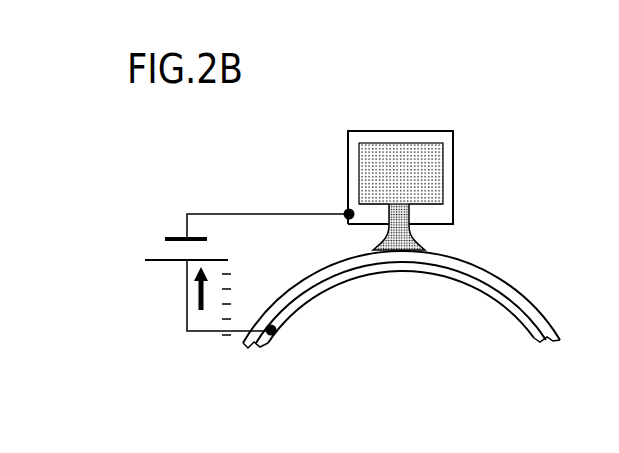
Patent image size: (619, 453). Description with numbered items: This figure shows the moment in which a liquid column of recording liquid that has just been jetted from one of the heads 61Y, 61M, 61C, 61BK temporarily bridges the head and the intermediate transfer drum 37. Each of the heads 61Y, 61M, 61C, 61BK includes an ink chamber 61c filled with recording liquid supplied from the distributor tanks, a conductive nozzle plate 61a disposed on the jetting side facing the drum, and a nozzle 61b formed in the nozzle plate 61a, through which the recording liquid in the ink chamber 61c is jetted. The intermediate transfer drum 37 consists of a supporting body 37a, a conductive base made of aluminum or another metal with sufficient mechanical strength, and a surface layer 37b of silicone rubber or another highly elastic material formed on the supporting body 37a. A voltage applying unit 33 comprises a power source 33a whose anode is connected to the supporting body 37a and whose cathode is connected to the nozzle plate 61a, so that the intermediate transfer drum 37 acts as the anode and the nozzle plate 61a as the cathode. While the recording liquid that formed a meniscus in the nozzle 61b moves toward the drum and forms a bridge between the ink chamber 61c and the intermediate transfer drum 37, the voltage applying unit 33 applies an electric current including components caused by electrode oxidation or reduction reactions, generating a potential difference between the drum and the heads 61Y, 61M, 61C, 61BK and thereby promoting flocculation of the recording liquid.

The voltage applying unit 33 is at (194, 280).
The power source 33a is at (141, 251).
The intermediate transfer drum 37 is at (405, 346).
The supporting body 37a is at (401, 334).
The surface layer 37b is at (540, 318).
The head 61Y is at (403, 128).
The head 61M is at (446, 194).
The head 61C is at (446, 194).
The head 61BK is at (446, 194).
The nozzle plate 61a is at (453, 215).
The nozzle 61b is at (427, 235).
The ink chamber 61c is at (453, 152).